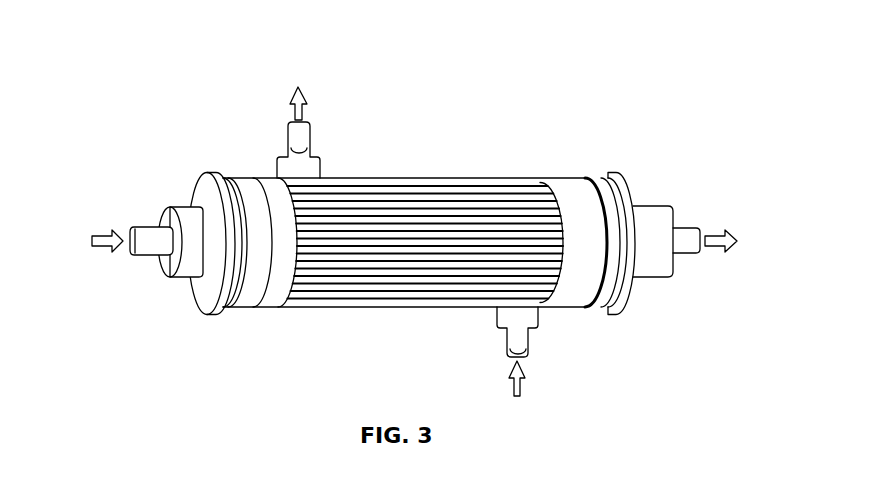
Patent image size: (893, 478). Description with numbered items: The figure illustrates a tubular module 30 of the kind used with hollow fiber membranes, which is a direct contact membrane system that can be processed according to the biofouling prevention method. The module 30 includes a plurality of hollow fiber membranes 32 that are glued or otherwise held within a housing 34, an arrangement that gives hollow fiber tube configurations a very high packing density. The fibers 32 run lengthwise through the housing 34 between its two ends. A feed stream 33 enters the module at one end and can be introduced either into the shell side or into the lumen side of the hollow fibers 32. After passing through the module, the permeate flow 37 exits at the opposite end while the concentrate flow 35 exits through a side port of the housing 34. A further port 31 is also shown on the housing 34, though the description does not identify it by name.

The module 30 is at (475, 138).
The inlet port 31 is at (517, 359).
The hollow fiber membranes 32 is at (356, 196).
The feed stream 33 is at (134, 242).
The housing 34 is at (312, 307).
The concentrate flow 35 is at (298, 122).
The permeate flow 37 is at (720, 240).